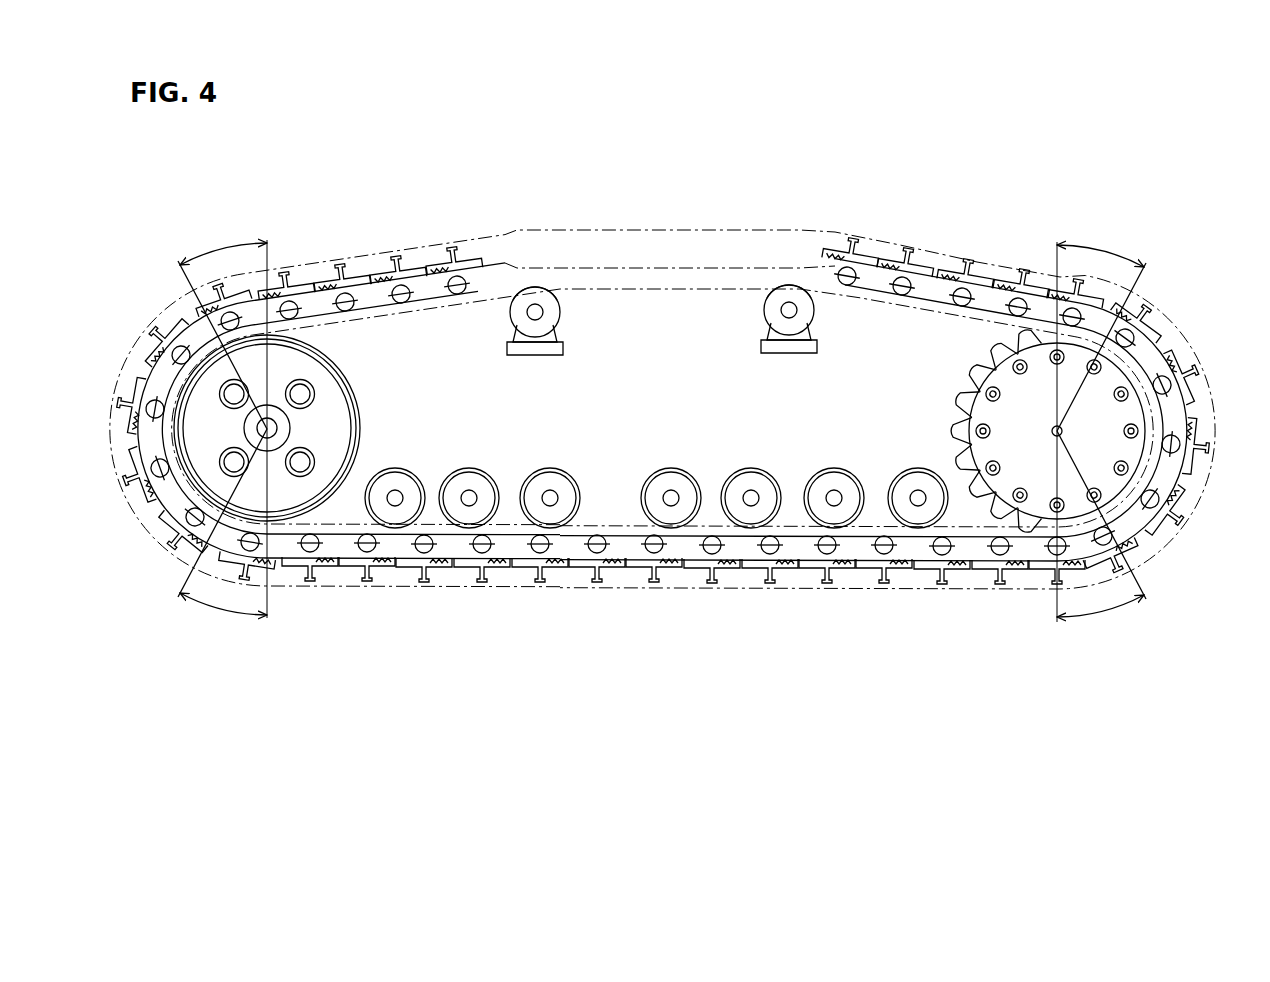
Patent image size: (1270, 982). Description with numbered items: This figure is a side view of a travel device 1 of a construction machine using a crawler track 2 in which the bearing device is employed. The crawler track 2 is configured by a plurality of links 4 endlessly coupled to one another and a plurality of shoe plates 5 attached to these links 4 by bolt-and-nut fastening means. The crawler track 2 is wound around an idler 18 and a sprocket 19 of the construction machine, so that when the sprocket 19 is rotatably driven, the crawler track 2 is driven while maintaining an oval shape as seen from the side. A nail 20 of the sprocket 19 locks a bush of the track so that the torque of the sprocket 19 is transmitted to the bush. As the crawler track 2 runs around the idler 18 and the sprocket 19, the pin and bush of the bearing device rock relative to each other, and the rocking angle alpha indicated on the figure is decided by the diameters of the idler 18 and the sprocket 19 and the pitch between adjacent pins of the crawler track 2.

The travel device 1 is at (1195, 286).
The crawler track 2 is at (888, 613).
The link 4 is at (455, 588).
The shoe plate 5 is at (360, 590).
The idler 18 is at (347, 402).
The sprocket 19 is at (937, 407).
The nail 20 is at (975, 356).